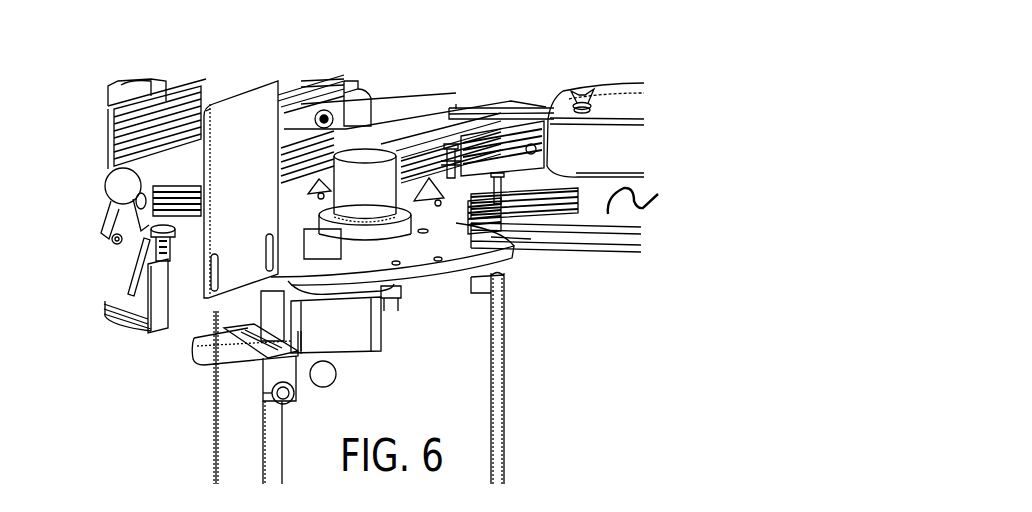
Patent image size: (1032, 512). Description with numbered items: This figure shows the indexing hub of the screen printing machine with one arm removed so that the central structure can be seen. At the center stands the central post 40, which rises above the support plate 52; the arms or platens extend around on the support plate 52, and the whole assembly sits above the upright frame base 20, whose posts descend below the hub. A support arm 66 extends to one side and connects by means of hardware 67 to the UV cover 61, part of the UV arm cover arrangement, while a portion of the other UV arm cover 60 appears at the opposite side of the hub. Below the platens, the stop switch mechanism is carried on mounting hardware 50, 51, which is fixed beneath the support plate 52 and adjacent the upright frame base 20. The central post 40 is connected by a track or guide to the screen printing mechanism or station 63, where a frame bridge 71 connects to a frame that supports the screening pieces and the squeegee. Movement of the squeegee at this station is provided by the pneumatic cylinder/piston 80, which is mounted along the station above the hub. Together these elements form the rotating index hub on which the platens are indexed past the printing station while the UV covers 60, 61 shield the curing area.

The upright frame base 20 is at (500, 352).
The central post 40 is at (397, 163).
The mounting hardware 50 is at (203, 365).
The mounting hardware 51 is at (258, 393).
The support plate 52 is at (507, 255).
The UV arm cover 60 is at (122, 166).
The UV cover 61 is at (643, 203).
The screen printing mechanism or station 63 is at (200, 262).
The support arm 66 is at (503, 100).
The hardware 67 is at (570, 87).
The frame bridge 71 is at (229, 100).
The pneumatic cylinder/piston 80 is at (417, 98).